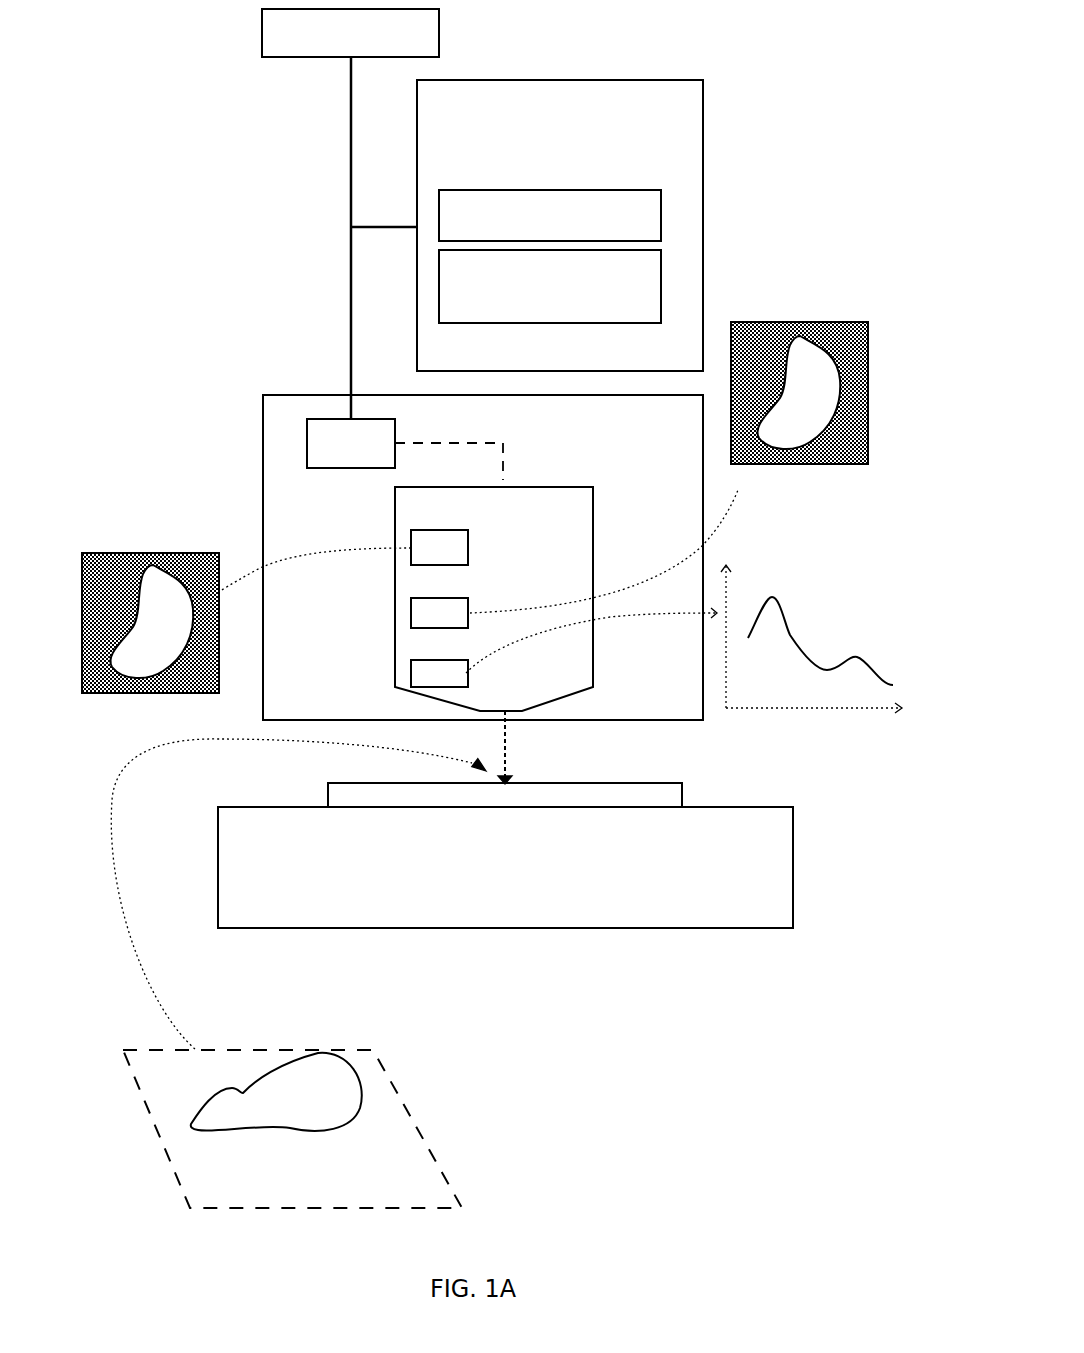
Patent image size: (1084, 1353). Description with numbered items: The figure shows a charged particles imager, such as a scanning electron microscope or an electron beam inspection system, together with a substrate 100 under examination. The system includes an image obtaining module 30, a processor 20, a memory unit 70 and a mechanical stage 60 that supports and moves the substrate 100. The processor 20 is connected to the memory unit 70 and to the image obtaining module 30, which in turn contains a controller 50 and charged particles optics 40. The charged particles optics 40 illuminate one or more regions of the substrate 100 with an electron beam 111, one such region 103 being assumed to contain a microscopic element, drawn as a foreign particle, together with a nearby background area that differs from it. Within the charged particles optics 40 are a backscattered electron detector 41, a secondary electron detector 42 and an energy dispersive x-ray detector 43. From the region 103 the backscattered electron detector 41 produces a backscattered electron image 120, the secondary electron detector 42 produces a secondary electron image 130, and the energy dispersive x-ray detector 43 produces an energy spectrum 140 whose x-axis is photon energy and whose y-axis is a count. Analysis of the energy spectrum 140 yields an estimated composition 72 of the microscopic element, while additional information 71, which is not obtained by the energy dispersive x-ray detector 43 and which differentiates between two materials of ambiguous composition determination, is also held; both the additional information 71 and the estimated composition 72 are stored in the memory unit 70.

The processor 20 is at (407, 43).
The memory unit 70 is at (635, 185).
The additional information 71 is at (560, 236).
The estimated composition 72 is at (598, 321).
The image obtaining module 30 is at (622, 469).
The controller 50 is at (338, 459).
The charged particles optics 40 is at (483, 610).
The backscattered electron detector 41 is at (428, 560).
The secondary electron detector 42 is at (428, 623).
The energy dispersive x-ray (EDX) detector 43 is at (428, 685).
The secondary electron image 130 is at (799, 407).
The backscattered electron image 120 is at (150, 637).
The energy spectrum 140 is at (817, 634).
The region 103 is at (298, 973).
The electron beam 111 is at (508, 741).
The substrate 100 is at (488, 805).
The mechanical stage 60 is at (492, 877).